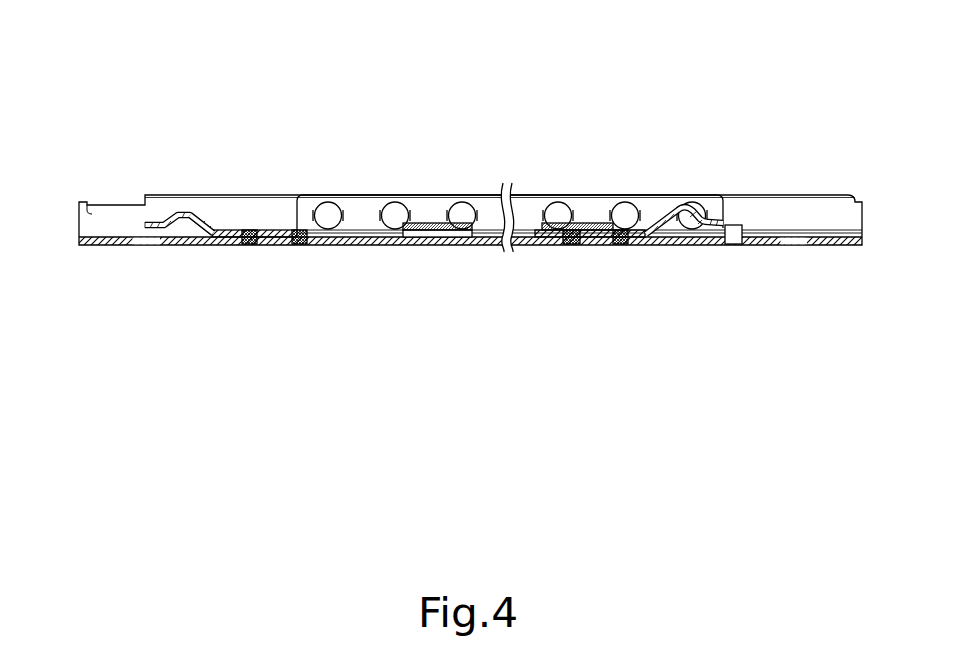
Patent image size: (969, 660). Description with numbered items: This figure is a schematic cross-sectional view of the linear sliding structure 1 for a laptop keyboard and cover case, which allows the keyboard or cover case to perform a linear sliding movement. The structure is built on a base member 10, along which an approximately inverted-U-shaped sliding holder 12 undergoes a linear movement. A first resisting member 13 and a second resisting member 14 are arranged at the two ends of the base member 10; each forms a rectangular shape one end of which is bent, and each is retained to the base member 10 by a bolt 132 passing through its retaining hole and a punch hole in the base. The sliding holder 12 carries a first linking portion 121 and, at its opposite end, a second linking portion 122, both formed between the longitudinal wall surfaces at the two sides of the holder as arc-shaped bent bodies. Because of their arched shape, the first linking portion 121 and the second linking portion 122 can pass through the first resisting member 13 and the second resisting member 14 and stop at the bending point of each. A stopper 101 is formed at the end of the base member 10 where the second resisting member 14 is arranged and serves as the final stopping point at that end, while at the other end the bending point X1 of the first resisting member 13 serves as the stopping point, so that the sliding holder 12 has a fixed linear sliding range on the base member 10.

The linear sliding structure 1 is at (470, 160).
The base member 10 is at (772, 200).
The stopper 101 is at (733, 245).
The sliding holder 12 is at (661, 198).
The first linking portion 121 is at (430, 221).
The second linking portion 122 is at (587, 220).
The first resisting member 13 is at (227, 241).
The bolt 132 is at (294, 244).
The second resisting member 14 is at (642, 245).
The bending point X1 is at (219, 226).